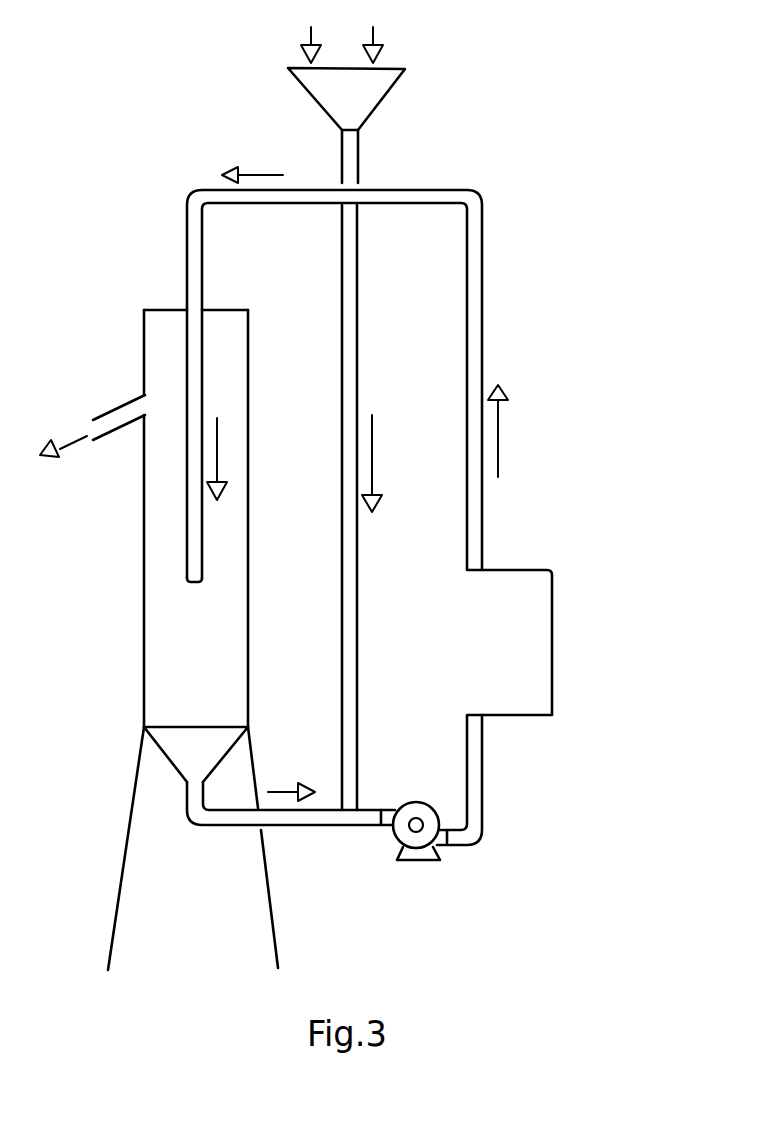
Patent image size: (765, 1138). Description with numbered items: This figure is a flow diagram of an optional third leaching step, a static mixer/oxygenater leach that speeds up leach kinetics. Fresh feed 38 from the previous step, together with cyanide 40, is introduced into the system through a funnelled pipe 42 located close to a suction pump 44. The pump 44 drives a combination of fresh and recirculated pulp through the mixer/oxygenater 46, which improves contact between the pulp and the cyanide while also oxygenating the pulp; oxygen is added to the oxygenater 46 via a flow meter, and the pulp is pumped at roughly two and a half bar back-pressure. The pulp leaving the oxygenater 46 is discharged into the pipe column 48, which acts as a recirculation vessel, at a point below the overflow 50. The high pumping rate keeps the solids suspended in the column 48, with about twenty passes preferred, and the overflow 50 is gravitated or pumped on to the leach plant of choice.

The fresh feed 38 is at (304, 49).
The cyanide 40 is at (385, 50).
The funnelled pipe 42 is at (385, 104).
The suction pump 44 is at (417, 803).
The mixer/oxygenater 46 is at (540, 650).
The pipe column 48 is at (144, 618).
The overflow 50 is at (110, 408).